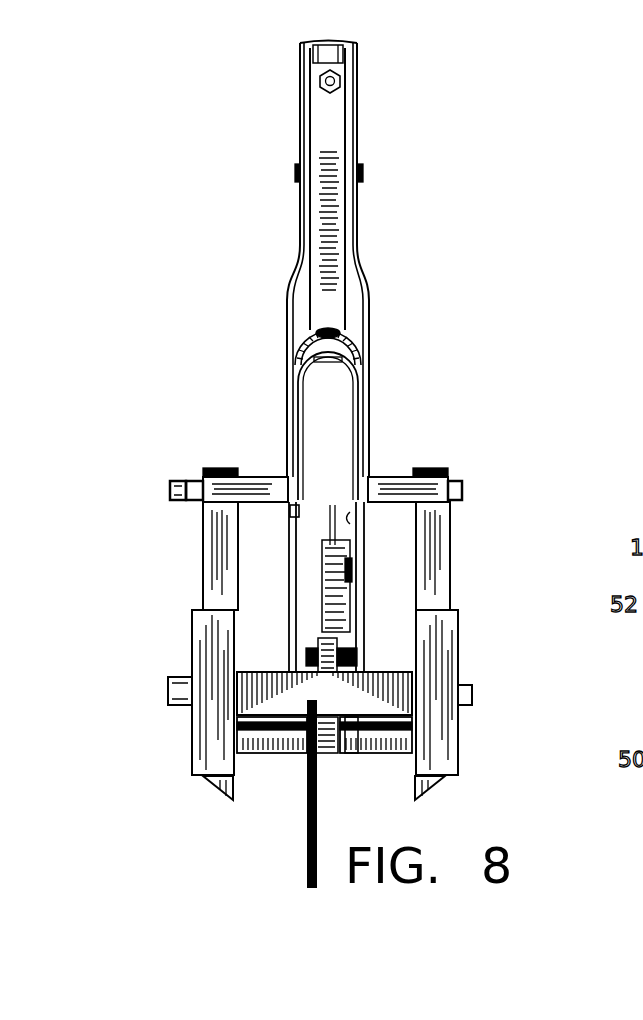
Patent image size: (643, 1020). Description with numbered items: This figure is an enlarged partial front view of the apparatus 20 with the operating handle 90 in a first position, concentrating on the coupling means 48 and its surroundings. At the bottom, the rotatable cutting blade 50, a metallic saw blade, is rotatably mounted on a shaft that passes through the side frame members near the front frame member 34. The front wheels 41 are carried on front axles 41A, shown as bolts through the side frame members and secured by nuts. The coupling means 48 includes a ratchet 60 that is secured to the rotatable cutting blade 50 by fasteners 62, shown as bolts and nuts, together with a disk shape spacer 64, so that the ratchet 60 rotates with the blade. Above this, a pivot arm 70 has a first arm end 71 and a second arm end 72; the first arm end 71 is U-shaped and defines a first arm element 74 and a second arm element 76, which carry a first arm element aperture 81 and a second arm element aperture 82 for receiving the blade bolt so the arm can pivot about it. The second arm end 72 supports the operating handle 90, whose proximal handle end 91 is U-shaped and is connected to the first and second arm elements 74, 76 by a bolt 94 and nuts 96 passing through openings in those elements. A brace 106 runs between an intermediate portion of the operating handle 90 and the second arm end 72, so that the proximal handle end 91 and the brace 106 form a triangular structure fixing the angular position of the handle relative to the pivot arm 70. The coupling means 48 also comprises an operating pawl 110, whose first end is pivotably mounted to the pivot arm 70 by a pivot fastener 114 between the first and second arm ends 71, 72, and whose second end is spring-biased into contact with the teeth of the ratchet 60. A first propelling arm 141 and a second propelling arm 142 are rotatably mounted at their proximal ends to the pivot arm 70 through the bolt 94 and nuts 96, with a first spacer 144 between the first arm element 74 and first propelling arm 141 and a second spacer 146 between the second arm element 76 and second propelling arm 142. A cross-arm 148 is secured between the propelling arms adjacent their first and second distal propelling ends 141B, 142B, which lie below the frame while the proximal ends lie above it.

The apparatus 20 is at (492, 176).
The front frame member 34 is at (263, 755).
The front wheels 41 is at (192, 773).
The front axle 41A is at (470, 690).
The coupling means 48 is at (196, 378).
The rotatable cutting blade 50 is at (280, 794).
The ratchet 60 is at (365, 612).
The fasteners 62 is at (375, 753).
The disk shape spacer 64 is at (327, 758).
The pivot arm 70 is at (370, 398).
The first arm end 71 is at (300, 598).
The second arm end 72 is at (366, 372).
The first arm element 74 is at (292, 383).
The second arm element 76 is at (366, 445).
The first arm element aperture 81 is at (292, 524).
The second arm element aperture 82 is at (352, 520).
The operating handle 90 is at (299, 44).
The proximal handle end 91 is at (352, 224).
The bolt 94 is at (470, 502).
The nuts 96 is at (168, 492).
The brace 106 is at (333, 157).
The operating pawl 110 is at (300, 572).
The pivot fastener 114 is at (370, 568).
The first propelling arm 141 is at (200, 602).
The first distal propelling end 141B is at (210, 793).
The second propelling arm 142 is at (450, 612).
The second distal propelling end 142B is at (450, 800).
The first spacer 144 is at (246, 477).
The second spacer 146 is at (393, 477).
The cross-arm 148 is at (283, 758).